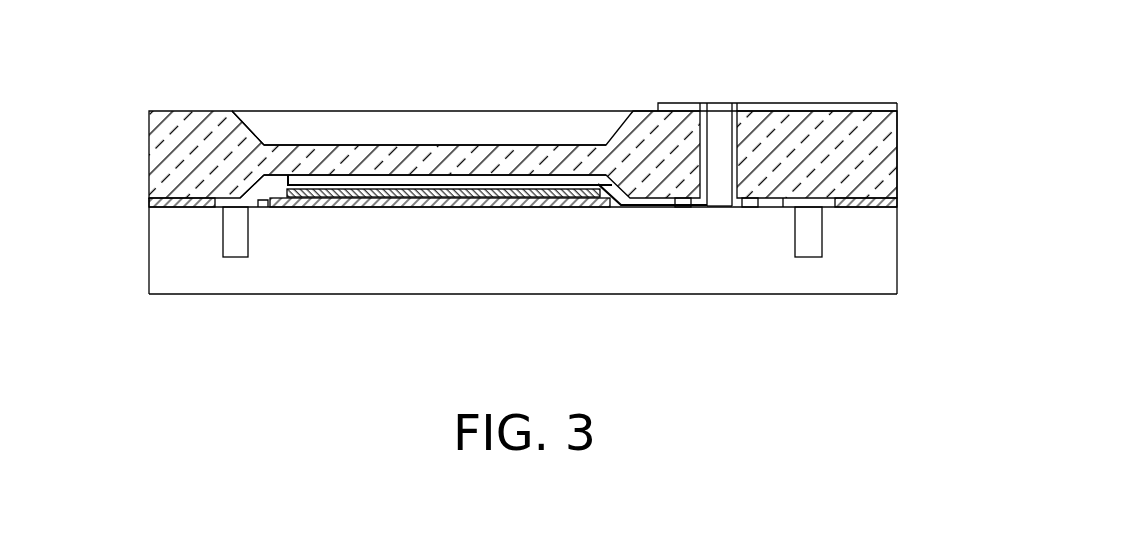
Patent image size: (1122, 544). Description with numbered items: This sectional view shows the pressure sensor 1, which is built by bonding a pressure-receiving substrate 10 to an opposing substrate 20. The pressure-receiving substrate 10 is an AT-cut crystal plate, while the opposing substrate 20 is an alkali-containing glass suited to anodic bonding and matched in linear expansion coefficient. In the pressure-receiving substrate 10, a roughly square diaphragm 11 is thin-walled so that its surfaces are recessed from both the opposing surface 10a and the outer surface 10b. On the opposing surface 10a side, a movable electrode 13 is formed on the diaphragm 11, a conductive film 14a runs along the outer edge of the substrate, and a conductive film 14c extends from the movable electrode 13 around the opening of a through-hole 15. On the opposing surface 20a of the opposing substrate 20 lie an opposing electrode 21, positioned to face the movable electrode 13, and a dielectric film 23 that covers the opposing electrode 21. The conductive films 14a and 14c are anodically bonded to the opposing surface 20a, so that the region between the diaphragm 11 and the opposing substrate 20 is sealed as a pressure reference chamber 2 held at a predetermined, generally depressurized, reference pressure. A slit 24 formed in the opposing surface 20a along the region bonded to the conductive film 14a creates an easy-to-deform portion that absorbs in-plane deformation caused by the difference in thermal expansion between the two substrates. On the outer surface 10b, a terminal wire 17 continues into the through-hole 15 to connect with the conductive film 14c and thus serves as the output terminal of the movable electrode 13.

The pressure sensor 1 is at (923, 61).
The pressure reference chamber 2 is at (603, 186).
The pressure-receiving substrate 10 is at (897, 157).
The opposing surface 10a is at (219, 196).
The outer surface 10b is at (655, 104).
The diaphragm 11 is at (496, 152).
The movable electrode 13 is at (379, 176).
The conductive film 14a is at (152, 203).
The conductive film 14c is at (750, 207).
The through-hole 15 is at (745, 126).
The terminal wire 17 is at (712, 155).
The opposing substrate 20 is at (897, 262).
The opposing surface 20a is at (258, 200).
The opposing electrode 21 is at (396, 207).
The dielectric film 23 is at (518, 198).
The slit 24 is at (238, 246).